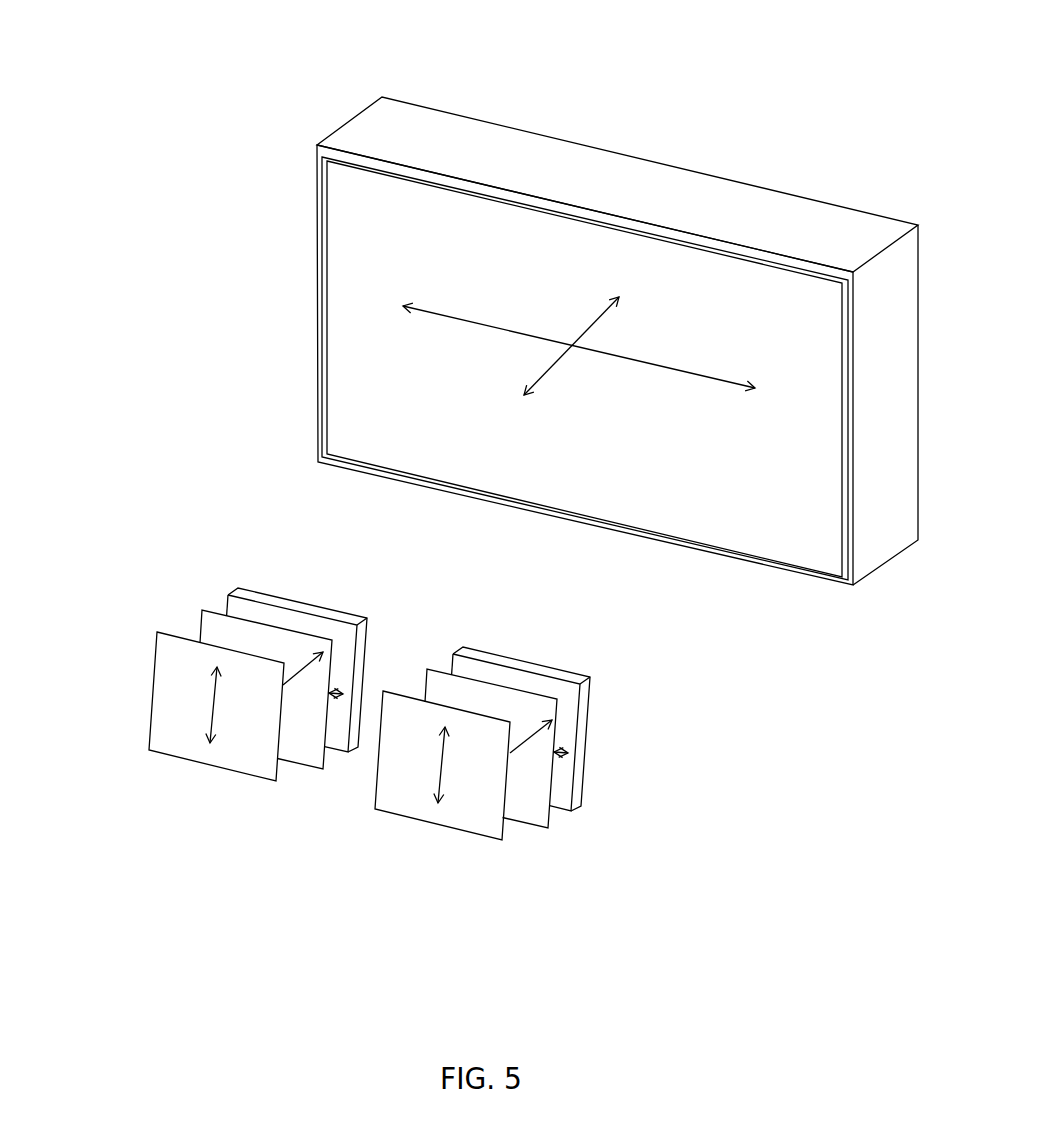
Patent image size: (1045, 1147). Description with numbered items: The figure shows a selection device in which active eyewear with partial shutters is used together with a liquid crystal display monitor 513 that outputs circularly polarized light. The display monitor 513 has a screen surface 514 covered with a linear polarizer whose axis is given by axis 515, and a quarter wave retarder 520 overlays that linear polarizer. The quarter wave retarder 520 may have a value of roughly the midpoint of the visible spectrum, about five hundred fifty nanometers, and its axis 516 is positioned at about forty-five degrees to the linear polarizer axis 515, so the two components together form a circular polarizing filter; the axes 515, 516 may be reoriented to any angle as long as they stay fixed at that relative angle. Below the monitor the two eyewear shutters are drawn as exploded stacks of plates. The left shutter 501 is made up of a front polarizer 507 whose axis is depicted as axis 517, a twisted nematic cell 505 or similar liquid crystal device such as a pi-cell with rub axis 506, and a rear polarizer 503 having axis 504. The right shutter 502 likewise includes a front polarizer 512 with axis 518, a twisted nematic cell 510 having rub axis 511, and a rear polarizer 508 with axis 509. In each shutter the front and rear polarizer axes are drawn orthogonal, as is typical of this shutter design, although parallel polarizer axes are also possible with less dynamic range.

The left shutter 501 is at (240, 703).
The right shutter 502 is at (566, 779).
The rear polarizer 503 is at (191, 758).
The axis 504 is at (222, 708).
The twisted nematic cell 505 is at (299, 711).
The rub axis 506 is at (303, 658).
The front polarizer 507 is at (325, 623).
The rear polarizer 508 is at (438, 848).
The axis 509 is at (450, 778).
The twisted nematic cell 510 is at (503, 762).
The rub axis 511 is at (527, 730).
The front polarizer 512 is at (563, 700).
The display monitor 513 is at (617, 355).
The screen surface 514 is at (847, 542).
The linear polarizer axis 515 is at (490, 312).
The quarter wave retarder axis 516 is at (594, 310).
The axis 517 is at (332, 688).
The axis 518 is at (557, 755).
The quarter wave retarder 520 is at (788, 538).